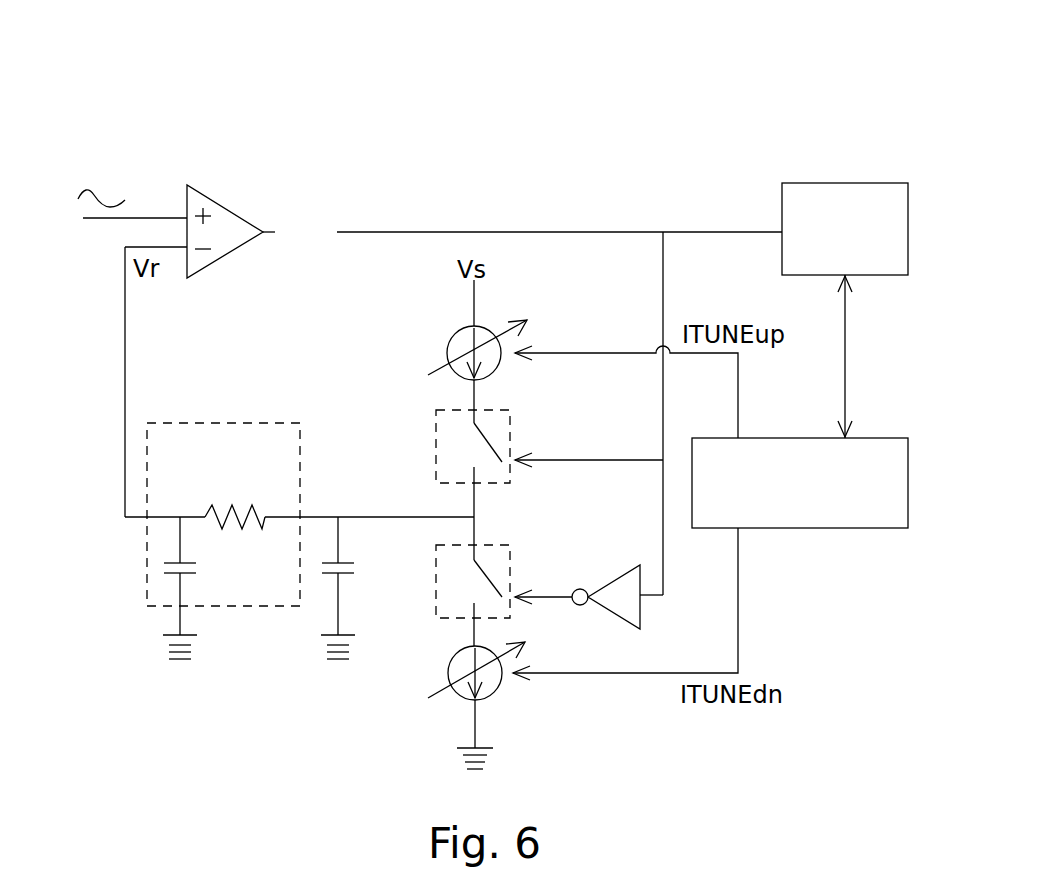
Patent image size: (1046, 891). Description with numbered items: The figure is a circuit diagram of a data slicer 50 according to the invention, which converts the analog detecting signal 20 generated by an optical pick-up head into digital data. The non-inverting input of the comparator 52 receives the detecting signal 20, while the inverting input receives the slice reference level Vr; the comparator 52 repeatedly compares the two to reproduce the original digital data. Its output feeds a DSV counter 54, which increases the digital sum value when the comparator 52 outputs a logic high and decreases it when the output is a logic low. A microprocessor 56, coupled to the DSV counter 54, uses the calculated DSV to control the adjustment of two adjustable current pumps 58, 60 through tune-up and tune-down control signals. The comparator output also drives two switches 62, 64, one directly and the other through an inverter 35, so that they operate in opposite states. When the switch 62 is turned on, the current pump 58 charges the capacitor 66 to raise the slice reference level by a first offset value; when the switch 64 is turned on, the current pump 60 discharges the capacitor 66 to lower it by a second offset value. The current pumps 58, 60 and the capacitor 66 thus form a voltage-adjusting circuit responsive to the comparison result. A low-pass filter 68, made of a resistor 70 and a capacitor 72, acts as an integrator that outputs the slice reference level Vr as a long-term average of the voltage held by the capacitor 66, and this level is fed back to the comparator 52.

The detecting signal 20 is at (114, 178).
The inverter 35 is at (617, 580).
The data slicer 50 is at (764, 66).
The comparator 52 is at (225, 205).
The DSV counter 54 is at (880, 183).
The microprocessor 56 is at (880, 438).
The current pump 58 is at (452, 335).
The current pump 60 is at (497, 697).
The switch 62 is at (436, 415).
The switch 64 is at (436, 550).
The capacitor 66 is at (356, 568).
The low-pass filter 68 is at (191, 501).
The resistor 70 is at (225, 505).
The capacitor 72 is at (165, 565).